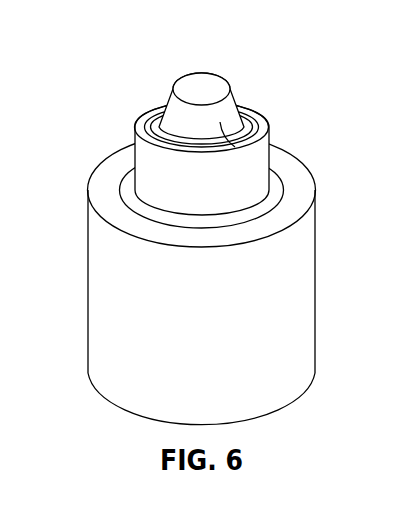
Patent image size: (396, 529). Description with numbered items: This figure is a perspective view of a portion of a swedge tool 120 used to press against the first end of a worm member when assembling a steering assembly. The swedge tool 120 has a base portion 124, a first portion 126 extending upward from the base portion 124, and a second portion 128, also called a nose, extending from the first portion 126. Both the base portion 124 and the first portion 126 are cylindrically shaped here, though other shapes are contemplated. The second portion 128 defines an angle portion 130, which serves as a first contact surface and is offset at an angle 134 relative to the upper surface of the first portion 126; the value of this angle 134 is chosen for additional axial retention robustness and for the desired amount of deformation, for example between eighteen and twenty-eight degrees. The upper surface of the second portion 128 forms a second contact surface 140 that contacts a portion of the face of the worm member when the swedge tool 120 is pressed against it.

The swedge tool 120 is at (197, 214).
The base portion 124 is at (105, 163).
The first portion 126 is at (148, 107).
The second portion 128 is at (198, 73).
The angle portion 130 is at (228, 113).
The angle 134 is at (243, 147).
The second contact surface 140 is at (205, 80).